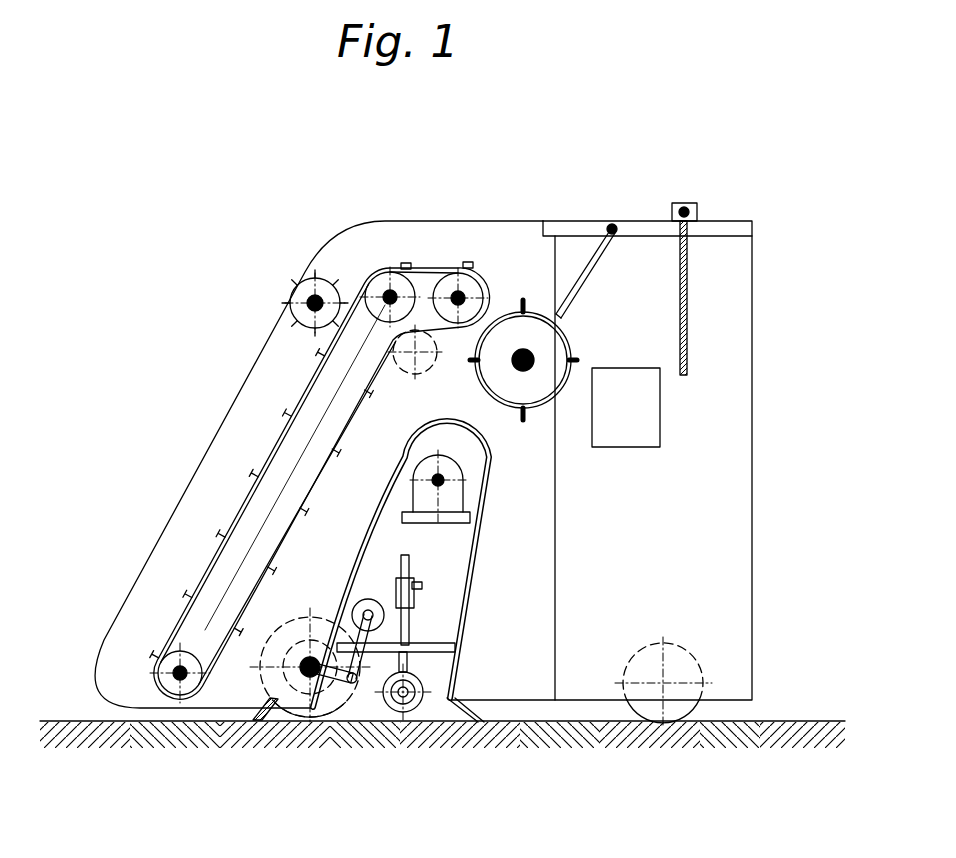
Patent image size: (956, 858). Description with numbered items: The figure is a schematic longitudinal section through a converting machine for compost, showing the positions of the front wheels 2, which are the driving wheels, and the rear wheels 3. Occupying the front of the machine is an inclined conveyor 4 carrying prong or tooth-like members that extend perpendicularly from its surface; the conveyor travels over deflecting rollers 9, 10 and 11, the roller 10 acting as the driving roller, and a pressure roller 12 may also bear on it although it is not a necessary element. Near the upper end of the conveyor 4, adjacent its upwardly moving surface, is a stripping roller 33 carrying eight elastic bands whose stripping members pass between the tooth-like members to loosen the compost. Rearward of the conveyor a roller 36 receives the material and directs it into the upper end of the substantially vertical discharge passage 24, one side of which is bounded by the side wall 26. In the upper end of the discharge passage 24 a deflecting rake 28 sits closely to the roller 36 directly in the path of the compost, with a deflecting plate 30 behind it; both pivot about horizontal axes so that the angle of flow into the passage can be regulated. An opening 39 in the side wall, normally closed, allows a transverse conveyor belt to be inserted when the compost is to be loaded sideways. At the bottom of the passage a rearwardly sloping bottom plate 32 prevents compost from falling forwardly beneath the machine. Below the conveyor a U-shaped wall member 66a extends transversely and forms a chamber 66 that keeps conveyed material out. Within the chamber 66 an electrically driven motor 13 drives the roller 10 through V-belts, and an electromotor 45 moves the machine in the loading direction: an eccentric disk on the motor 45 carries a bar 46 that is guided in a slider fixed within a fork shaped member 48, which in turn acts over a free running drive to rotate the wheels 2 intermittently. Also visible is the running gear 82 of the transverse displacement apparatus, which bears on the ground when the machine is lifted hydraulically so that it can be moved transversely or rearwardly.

The front wheels 2 is at (303, 720).
The rear wheels 3 is at (678, 710).
The conveyor 4 is at (265, 448).
The deflecting roller 9 is at (170, 688).
The deflecting roller 10 is at (389, 290).
The deflecting roller 11 is at (443, 285).
The pressure roller 12 is at (422, 357).
The electrically driven motor 13 is at (444, 470).
The discharge passage 24 is at (664, 482).
The side wall 26 is at (740, 355).
The deflecting rake 28 is at (581, 225).
The deflecting plate 30 is at (687, 306).
The bottom plate 32 is at (475, 722).
The stripping roller 33 is at (293, 297).
The roller 36 is at (515, 330).
The opening 39 is at (640, 390).
The electromotor 45 is at (370, 600).
The bar 46 is at (357, 688).
The fork shaped member 48 is at (341, 683).
The chamber 66 is at (458, 566).
The U-shaped wall member 66a is at (472, 591).
The running gear 82 is at (405, 713).